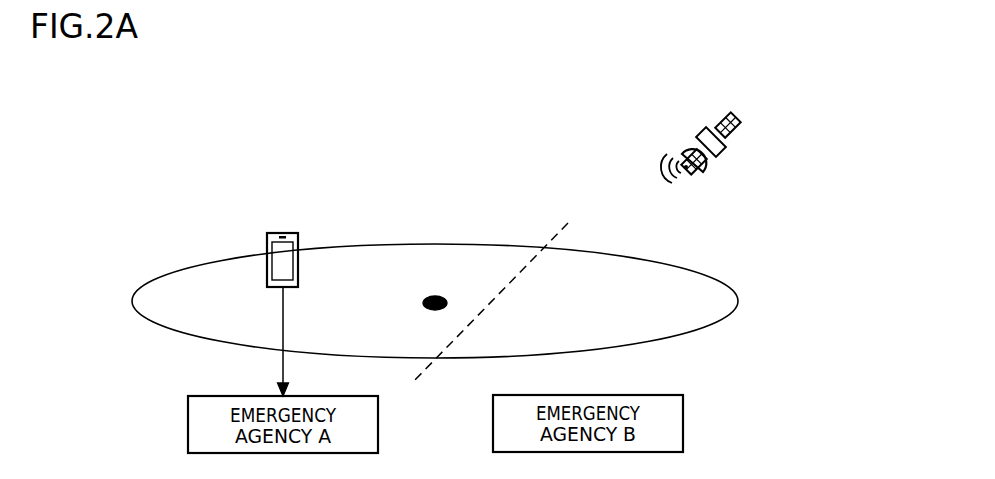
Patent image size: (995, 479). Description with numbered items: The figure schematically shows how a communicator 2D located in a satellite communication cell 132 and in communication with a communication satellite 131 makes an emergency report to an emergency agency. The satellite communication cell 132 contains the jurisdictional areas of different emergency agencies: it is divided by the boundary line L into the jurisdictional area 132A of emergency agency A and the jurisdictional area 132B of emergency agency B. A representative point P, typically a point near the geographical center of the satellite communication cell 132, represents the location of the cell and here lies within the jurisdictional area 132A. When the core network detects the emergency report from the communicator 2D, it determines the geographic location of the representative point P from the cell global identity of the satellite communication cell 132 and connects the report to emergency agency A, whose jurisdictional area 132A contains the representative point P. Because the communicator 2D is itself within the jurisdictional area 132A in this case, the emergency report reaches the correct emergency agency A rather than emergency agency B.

The communication satellite 131 is at (723, 127).
The satellite communication cell 132 is at (777, 303).
The jurisdictional area of emergency agency A 132A is at (383, 245).
The jurisdictional area of emergency agency B 132B is at (703, 274).
The communicator 2D is at (282, 232).
The representative point P is at (437, 295).
The boundary line L is at (482, 315).